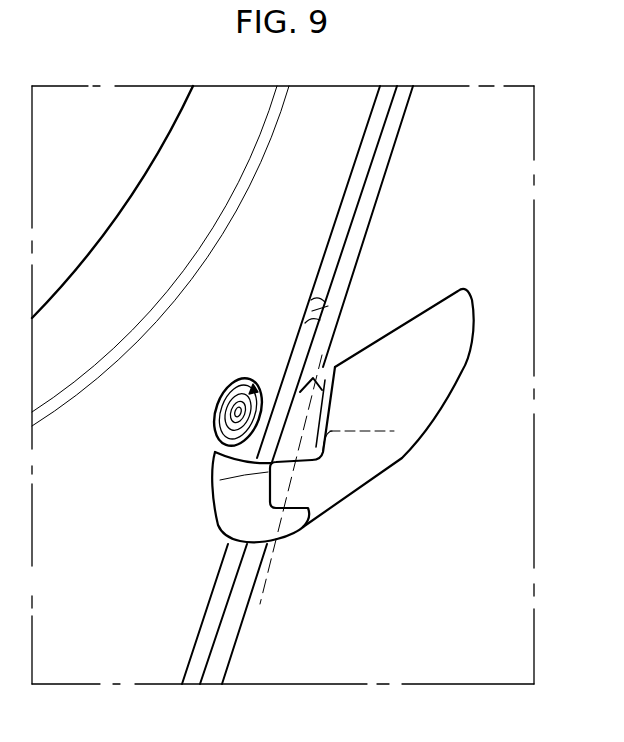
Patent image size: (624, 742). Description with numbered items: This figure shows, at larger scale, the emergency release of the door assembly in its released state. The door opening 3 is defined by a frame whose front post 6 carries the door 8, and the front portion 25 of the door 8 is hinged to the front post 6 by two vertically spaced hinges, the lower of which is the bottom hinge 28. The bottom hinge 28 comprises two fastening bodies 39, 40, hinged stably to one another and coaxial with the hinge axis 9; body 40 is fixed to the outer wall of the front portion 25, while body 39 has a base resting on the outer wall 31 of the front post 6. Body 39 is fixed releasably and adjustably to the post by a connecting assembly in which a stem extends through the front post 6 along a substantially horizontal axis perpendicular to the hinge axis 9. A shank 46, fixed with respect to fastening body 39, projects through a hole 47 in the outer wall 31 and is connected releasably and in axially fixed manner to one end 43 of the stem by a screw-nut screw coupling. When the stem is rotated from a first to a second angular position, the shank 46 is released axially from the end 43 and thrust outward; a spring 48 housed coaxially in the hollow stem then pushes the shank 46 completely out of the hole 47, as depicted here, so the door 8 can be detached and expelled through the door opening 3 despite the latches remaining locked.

The door opening 3 is at (331, 236).
The front post 6 is at (314, 209).
The door 8 is at (514, 210).
The hinge axis 9 is at (396, 431).
The front portion 25 is at (405, 277).
The bottom hinge 28 is at (307, 531).
The outer wall 31 is at (329, 175).
The fastening body 39 is at (235, 516).
The fastening body 40 is at (345, 473).
The end 43 is at (210, 451).
The shank 46 is at (220, 478).
The hole 47 is at (262, 394).
The spring 48 is at (213, 428).